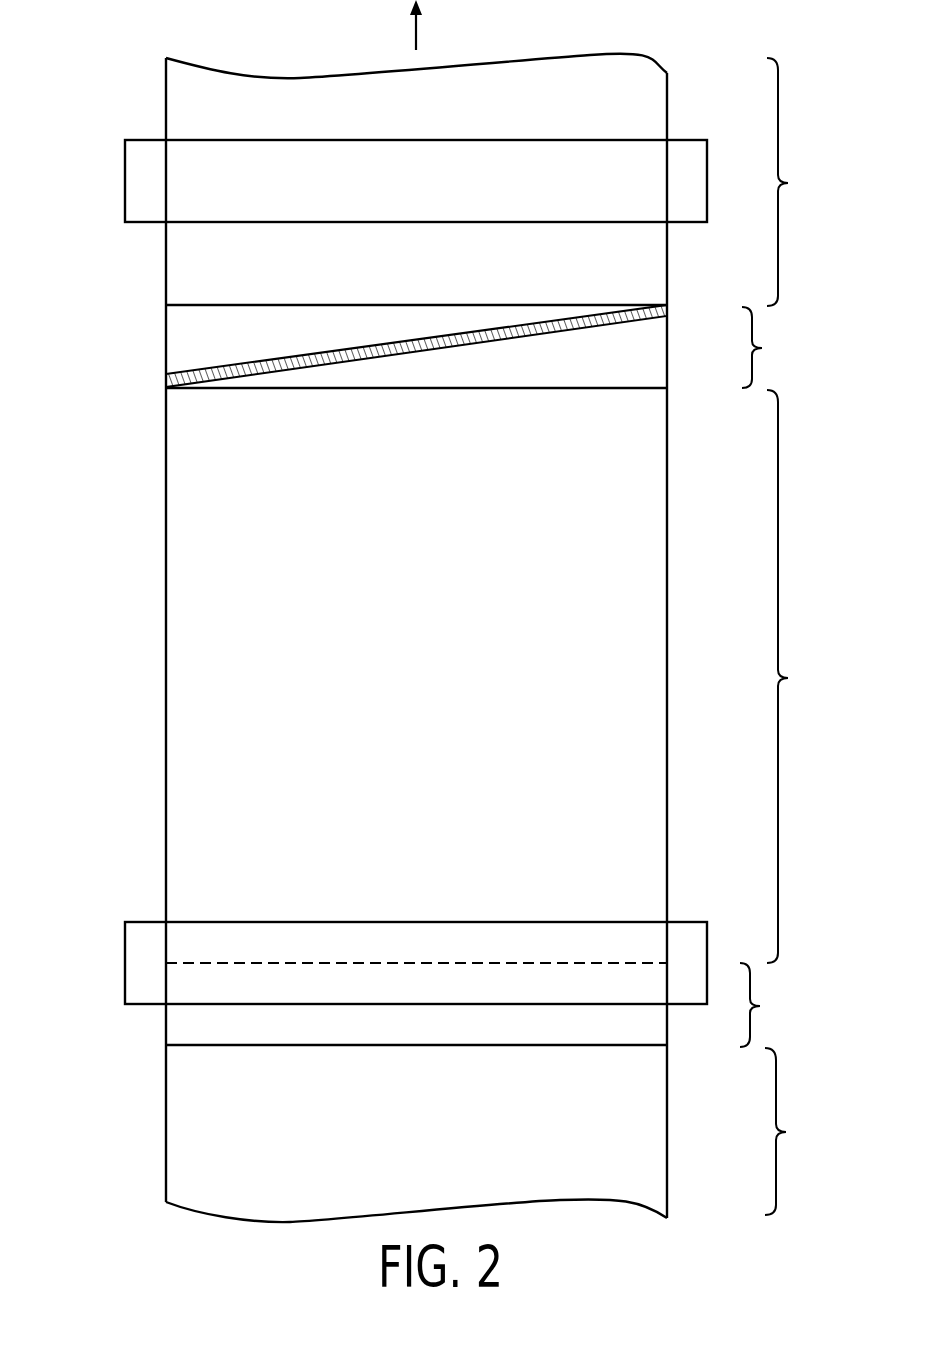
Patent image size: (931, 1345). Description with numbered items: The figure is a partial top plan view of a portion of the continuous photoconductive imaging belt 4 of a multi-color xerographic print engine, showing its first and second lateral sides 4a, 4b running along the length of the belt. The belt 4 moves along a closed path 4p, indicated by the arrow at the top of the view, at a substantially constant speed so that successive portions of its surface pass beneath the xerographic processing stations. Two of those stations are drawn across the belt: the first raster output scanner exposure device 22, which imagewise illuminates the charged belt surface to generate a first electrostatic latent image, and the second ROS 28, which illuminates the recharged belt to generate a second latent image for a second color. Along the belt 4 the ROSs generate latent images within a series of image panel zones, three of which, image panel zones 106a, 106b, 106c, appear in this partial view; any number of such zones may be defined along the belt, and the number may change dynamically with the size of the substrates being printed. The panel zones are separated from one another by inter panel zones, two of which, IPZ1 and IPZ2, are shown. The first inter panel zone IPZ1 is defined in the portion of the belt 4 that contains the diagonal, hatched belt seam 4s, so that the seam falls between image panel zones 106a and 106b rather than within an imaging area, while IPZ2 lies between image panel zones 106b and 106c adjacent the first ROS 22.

The photoreceptor belt 4 is at (388, 638).
The first lateral side 4a is at (166, 562).
The second lateral side 4b is at (667, 562).
The closed path 4p is at (412, 30).
The belt seam 4s is at (528, 336).
The second ROS 28 is at (125, 181).
The first raster output scanner (ROS) exposure device 22 is at (125, 963).
The image panel zone 106a is at (802, 182).
The image panel zone 106b is at (802, 676).
The image panel zone 106c is at (799, 1131).
The inter panel zone IPZ1 is at (776, 347).
The inter panel zone IPZ2 is at (774, 1005).